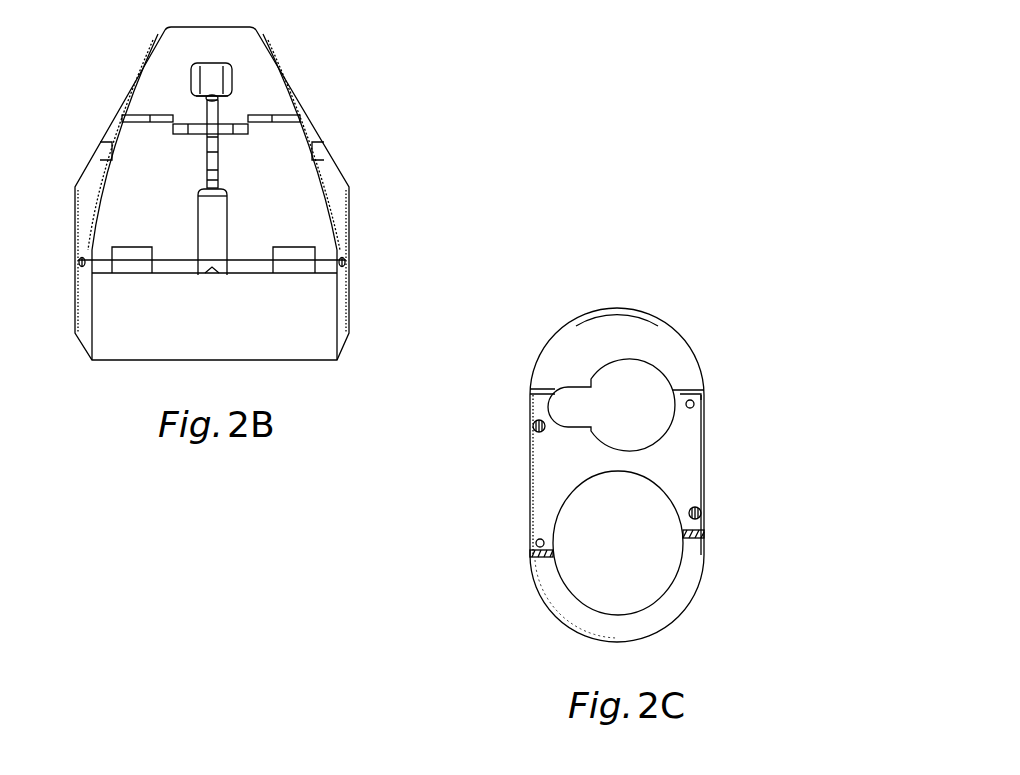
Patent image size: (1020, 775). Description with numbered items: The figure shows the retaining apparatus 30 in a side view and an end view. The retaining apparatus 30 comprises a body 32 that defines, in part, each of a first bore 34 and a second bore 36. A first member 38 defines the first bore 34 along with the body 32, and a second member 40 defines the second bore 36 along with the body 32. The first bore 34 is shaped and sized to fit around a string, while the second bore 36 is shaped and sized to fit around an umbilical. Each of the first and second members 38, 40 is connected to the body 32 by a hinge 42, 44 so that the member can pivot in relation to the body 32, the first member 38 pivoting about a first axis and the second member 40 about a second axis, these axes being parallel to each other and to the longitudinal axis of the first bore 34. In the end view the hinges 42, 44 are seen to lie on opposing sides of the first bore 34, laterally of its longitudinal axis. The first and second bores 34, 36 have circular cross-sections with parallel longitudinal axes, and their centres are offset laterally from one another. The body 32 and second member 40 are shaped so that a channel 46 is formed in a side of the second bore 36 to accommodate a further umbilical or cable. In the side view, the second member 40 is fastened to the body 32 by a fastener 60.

In FIG. 2B, the retaining apparatus 30 is at (378, 99).
In FIG. 2C, the retaining apparatus 30 is at (685, 274).
In FIG. 2B, the body 32 is at (290, 186).
In FIG. 2C, the body 32 is at (683, 457).
In FIG. 2C, the first bore 34 is at (648, 567).
In FIG. 2C, the second bore 36 is at (643, 387).
In FIG. 2B, the first member 38 is at (228, 333).
In FIG. 2C, the first member 38 is at (553, 594).
In FIG. 2B, the second member 40 is at (226, 58).
In FIG. 2C, the second member 40 is at (573, 353).
In FIG. 2C, the hinge 42 is at (702, 513).
In FIG. 2C, the hinge 44 is at (533, 424).
In FIG. 2C, the channel 46 is at (572, 403).
In FIG. 2B, the fastener 60 is at (224, 116).